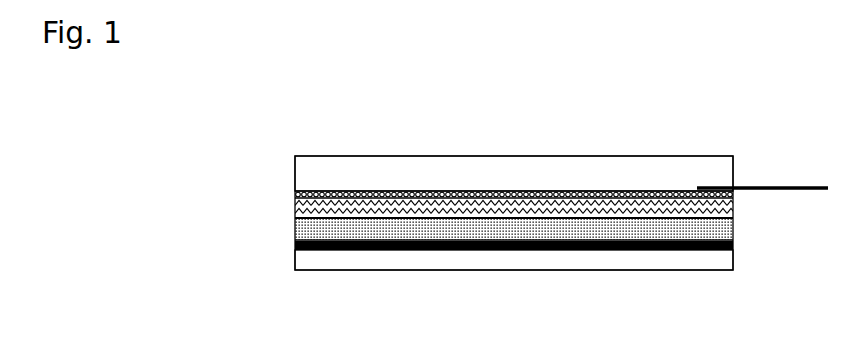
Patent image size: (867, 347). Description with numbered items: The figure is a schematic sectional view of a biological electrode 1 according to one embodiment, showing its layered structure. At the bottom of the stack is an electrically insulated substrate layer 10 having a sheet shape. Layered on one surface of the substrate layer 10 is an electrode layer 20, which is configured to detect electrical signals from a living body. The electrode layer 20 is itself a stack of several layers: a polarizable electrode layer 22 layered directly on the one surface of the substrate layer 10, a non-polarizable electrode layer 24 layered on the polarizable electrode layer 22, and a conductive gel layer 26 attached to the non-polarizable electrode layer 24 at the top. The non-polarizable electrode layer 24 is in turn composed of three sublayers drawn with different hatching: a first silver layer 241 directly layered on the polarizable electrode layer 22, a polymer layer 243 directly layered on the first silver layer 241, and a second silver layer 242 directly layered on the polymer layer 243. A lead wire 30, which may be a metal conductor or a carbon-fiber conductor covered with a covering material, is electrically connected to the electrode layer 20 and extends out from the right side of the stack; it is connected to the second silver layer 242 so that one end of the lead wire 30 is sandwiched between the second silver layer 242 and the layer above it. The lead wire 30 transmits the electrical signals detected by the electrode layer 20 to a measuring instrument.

The biological electrode 1 is at (532, 133).
The substrate layer 10 is at (308, 257).
The electrode layer 20 is at (407, 189).
The polarizable electrode layer 22 is at (297, 246).
The non-polarizable electrode layer 24 is at (435, 196).
The first silver layer 241 is at (297, 229).
The second silver layer 242 is at (297, 194).
The polymer layer 243 is at (297, 207).
The conductive gel layer 26 is at (308, 165).
The lead wire 30 is at (767, 190).